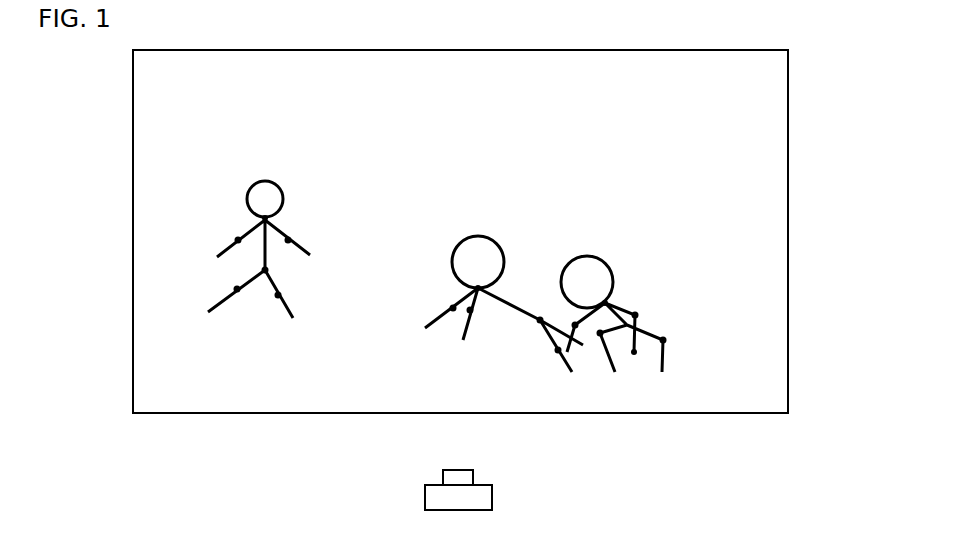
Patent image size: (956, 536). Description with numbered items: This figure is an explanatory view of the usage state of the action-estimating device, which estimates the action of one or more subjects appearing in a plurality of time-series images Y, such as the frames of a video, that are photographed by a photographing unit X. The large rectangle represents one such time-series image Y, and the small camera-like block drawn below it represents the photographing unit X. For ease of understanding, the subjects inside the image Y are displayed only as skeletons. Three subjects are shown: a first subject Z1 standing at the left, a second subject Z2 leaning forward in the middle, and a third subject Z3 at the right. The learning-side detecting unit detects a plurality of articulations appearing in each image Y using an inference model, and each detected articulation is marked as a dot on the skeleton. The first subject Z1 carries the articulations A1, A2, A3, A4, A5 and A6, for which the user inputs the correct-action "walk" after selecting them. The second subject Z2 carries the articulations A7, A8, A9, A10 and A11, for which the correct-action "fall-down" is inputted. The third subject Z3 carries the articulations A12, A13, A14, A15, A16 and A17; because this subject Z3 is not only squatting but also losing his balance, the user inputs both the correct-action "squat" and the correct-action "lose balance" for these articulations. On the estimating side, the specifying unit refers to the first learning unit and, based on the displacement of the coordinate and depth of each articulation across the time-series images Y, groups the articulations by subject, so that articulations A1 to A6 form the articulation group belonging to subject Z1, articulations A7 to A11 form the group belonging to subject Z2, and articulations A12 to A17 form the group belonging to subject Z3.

The time-series image Y is at (805, 100).
The photographing unit X is at (513, 490).
The subject Z1 is at (302, 173).
The subject Z2 is at (482, 213).
The subject Z3 is at (611, 232).
The articulation A1 is at (252, 219).
The articulation A2 is at (233, 237).
The articulation A3 is at (297, 240).
The articulation A4 is at (272, 273).
The articulation A5 is at (230, 289).
The articulation A6 is at (272, 303).
The articulation A7 is at (458, 283).
The articulation A8 is at (447, 306).
The articulation A9 is at (478, 320).
The articulation A10 is at (540, 327).
The articulation A11 is at (557, 352).
The articulation A12 is at (612, 298).
The articulation A13 is at (565, 317).
The articulation A14 is at (645, 308).
The articulation A15 is at (628, 337).
The articulation A16 is at (595, 335).
The articulation A17 is at (677, 337).